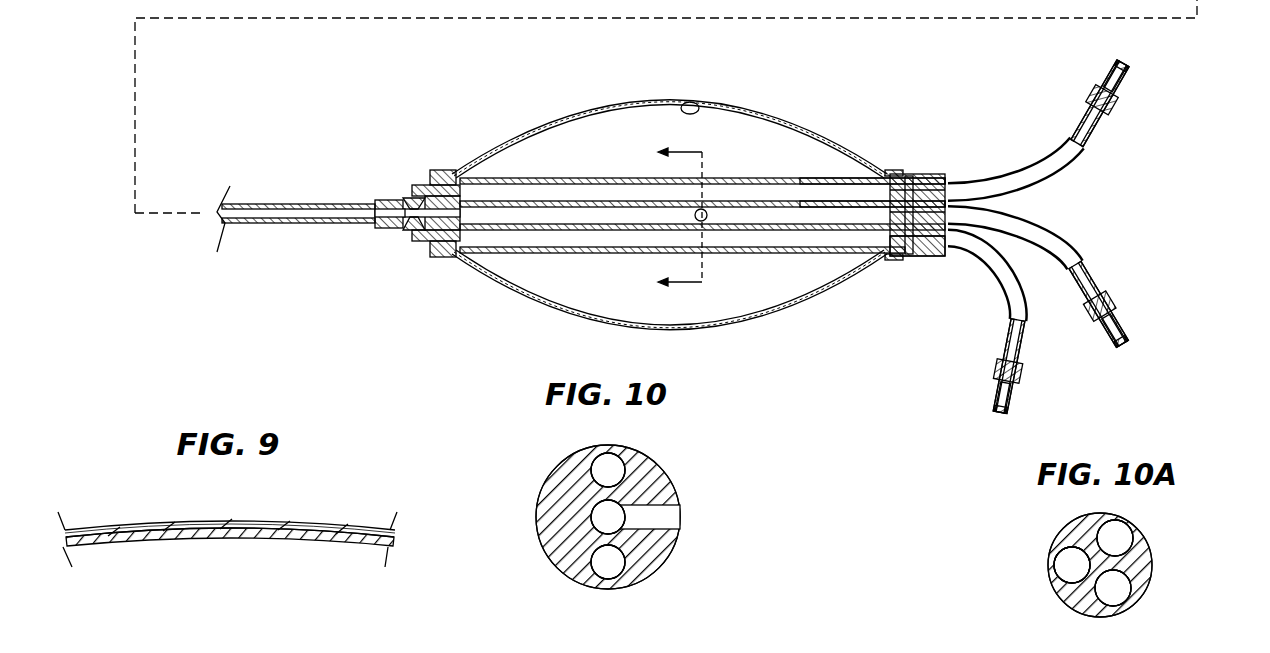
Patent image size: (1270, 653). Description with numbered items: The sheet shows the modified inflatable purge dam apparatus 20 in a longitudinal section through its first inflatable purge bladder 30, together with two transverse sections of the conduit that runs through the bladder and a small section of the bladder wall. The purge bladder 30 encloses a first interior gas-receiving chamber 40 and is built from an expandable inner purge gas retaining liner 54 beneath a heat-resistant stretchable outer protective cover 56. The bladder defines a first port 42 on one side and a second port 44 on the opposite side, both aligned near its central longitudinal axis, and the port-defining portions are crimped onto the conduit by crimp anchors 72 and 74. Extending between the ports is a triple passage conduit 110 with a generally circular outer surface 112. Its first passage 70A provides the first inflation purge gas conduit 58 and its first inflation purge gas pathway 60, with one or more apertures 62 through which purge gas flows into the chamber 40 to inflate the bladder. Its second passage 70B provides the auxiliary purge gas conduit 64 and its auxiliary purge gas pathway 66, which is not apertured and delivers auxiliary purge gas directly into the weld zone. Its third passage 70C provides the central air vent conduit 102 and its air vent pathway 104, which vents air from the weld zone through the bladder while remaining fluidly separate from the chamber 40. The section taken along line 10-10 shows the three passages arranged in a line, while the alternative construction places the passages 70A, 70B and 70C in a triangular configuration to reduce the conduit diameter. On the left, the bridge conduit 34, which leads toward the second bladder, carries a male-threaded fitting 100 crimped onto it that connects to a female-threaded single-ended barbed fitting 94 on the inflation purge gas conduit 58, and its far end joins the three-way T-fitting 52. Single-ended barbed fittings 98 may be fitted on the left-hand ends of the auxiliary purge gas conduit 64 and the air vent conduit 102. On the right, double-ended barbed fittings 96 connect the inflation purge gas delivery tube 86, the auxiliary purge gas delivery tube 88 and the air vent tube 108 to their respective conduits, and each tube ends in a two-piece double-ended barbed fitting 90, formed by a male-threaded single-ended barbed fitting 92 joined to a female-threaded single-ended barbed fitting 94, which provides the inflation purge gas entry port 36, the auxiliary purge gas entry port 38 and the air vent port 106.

In FIG. 8, the section line 10- 10 is at (669, 217).
In FIG. 8, the inflatable purge dam apparatus 20 is at (815, 125).
In FIG. 8, the first inflatable purge bladder 30 is at (738, 320).
In FIG. 8, the bridge conduit 34 is at (242, 220).
In FIG. 8, the inflation purge gas entry port 36 is at (1128, 345).
In FIG. 8, the auxiliary purge gas entry port 38 is at (1122, 65).
In FIG. 8, the first interior gas-receiving chamber 40 is at (753, 160).
In FIG. 8, the first port 42 is at (907, 260).
In FIG. 8, the second port 44 is at (428, 244).
In FIG. 8, the three-way T-fitting 52 is at (666, 106).
In FIG. 8, the inner purge gas retaining liner 54 is at (700, 103).
In FIG. 9, the inner purge gas retaining liner 54 is at (268, 545).
In FIG. 8, the outer protective cover 56 is at (668, 101).
In FIG. 9, the outer protective cover 56 is at (300, 522).
In FIG. 8, the first inflation purge gas conduit 58 is at (740, 228).
In FIG. 10, the first inflation purge gas conduit 58 is at (608, 517).
In FIG. 10A, the first inflation purge gas conduit 58 is at (1113, 588).
In FIG. 8, the first inflation purge gas pathway 60 is at (845, 252).
In FIG. 10, the first inflation purge gas pathway 60 is at (608, 517).
In FIG. 10A, the first inflation purge gas pathway 60 is at (1113, 588).
In FIG. 8, the apertures 62 is at (704, 221).
In FIG. 10, the apertures 62 is at (668, 515).
In FIG. 10A, the apertures 62 is at (1055, 567).
In FIG. 8, the auxiliary purge gas conduit 64 is at (590, 177).
In FIG. 10, the auxiliary purge gas conduit 64 is at (608, 470).
In FIG. 10A, the auxiliary purge gas conduit 64 is at (1115, 538).
In FIG. 8, the auxiliary purge gas pathway 66 is at (806, 193).
In FIG. 10, the auxiliary purge gas pathway 66 is at (608, 470).
In FIG. 10A, the auxiliary purge gas pathway 66 is at (1115, 538).
In FIG. 10, the first passage 70A is at (600, 517).
In FIG. 10A, the first passage 70A is at (1118, 586).
In FIG. 10, the second passage 70B is at (612, 466).
In FIG. 10A, the second passage 70B is at (1120, 537).
In FIG. 10, the third passage 70C is at (607, 560).
In FIG. 10A, the third passage 70C is at (1072, 558).
In FIG. 8, the crimp anchor 72 is at (921, 172).
In FIG. 8, the crimp anchor 74 is at (440, 170).
In FIG. 8, the inflation purge gas delivery tube 86 is at (1052, 237).
In FIG. 8, the auxiliary purge gas delivery tube 88 is at (1037, 162).
In FIG. 8, the two-piece double-ended barbed fitting 90 is at (1100, 45).
In FIG. 8, the male-threaded single-ended barbed fitting 92 is at (1118, 88).
In FIG. 8, the female-threaded single-ended barbed fitting 94 is at (442, 258).
In FIG. 8, the double-ended barbed fitting 96 is at (960, 174).
In FIG. 8, the single-ended barbed fitting 98 is at (413, 186).
In FIG. 8, the male-threaded fitting 100 is at (388, 202).
In FIG. 8, the air vent conduit 102 is at (607, 250).
In FIG. 10, the air vent conduit 102 is at (608, 562).
In FIG. 10A, the air vent conduit 102 is at (1072, 565).
In FIG. 8, the air vent pathway 104 is at (570, 243).
In FIG. 10, the air vent pathway 104 is at (608, 562).
In FIG. 10A, the air vent pathway 104 is at (1072, 565).
In FIG. 8, the air vent port 106 is at (998, 412).
In FIG. 8, the air vent tube 108 is at (1005, 279).
In FIG. 10, the triple passage conduit 110 is at (668, 482).
In FIG. 10A, the triple passage conduit 110 is at (1140, 558).
In FIG. 10, the generally circular outer surface 112 is at (542, 547).
In FIG. 10A, the generally circular outer surface 112 is at (1060, 595).